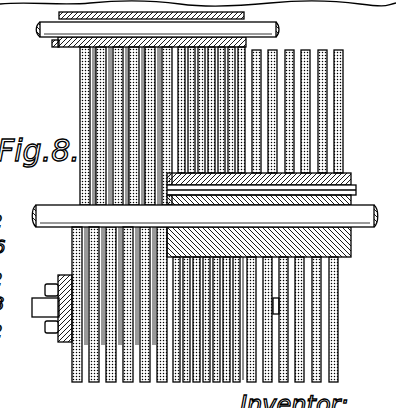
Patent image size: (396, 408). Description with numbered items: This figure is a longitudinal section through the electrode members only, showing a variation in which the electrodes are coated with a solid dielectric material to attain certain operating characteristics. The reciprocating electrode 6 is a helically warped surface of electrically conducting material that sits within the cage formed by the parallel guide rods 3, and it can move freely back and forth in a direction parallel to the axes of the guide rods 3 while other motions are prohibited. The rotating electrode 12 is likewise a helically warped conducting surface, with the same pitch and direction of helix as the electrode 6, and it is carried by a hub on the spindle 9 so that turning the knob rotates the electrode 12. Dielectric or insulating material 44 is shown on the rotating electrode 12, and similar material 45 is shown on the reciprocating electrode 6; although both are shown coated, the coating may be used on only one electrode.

The guide rod 3 is at (278, 31).
The spindle 9 is at (65, 217).
The electrode 6 is at (75, 367).
The electrode 12 is at (338, 353).
The dielectric or insulating material 44 is at (197, 383).
The dielectric or insulating material 45 is at (125, 383).